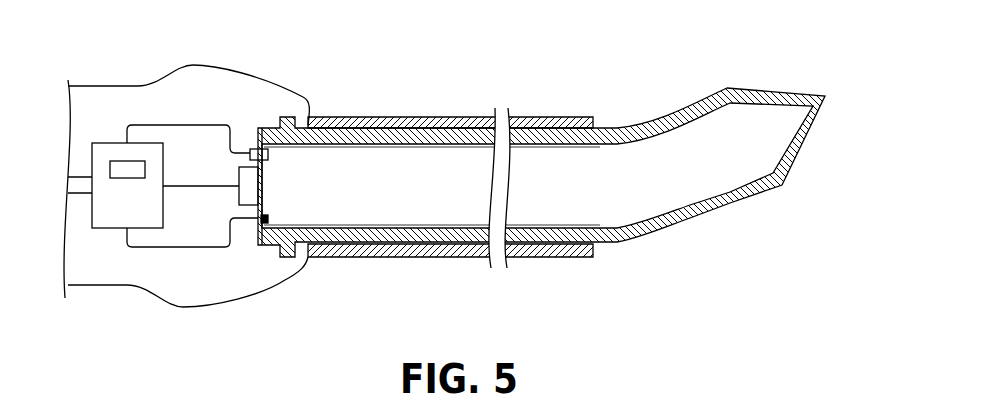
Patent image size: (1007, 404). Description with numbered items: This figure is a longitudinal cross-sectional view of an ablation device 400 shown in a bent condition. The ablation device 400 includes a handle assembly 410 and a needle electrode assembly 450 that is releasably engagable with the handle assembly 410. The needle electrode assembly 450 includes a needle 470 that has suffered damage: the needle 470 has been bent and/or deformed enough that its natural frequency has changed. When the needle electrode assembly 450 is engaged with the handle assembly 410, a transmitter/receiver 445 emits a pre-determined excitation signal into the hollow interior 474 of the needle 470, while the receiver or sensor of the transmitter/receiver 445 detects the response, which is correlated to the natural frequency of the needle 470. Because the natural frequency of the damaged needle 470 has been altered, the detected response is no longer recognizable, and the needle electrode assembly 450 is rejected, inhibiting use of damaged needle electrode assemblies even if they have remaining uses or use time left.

The ablation device 400 is at (568, 54).
The handle assembly 410 is at (95, 86).
The transmitter/receiver 445 is at (253, 190).
The needle electrode assembly 450 is at (400, 118).
The needle 470 is at (740, 203).
The hollow interior 474 is at (683, 182).